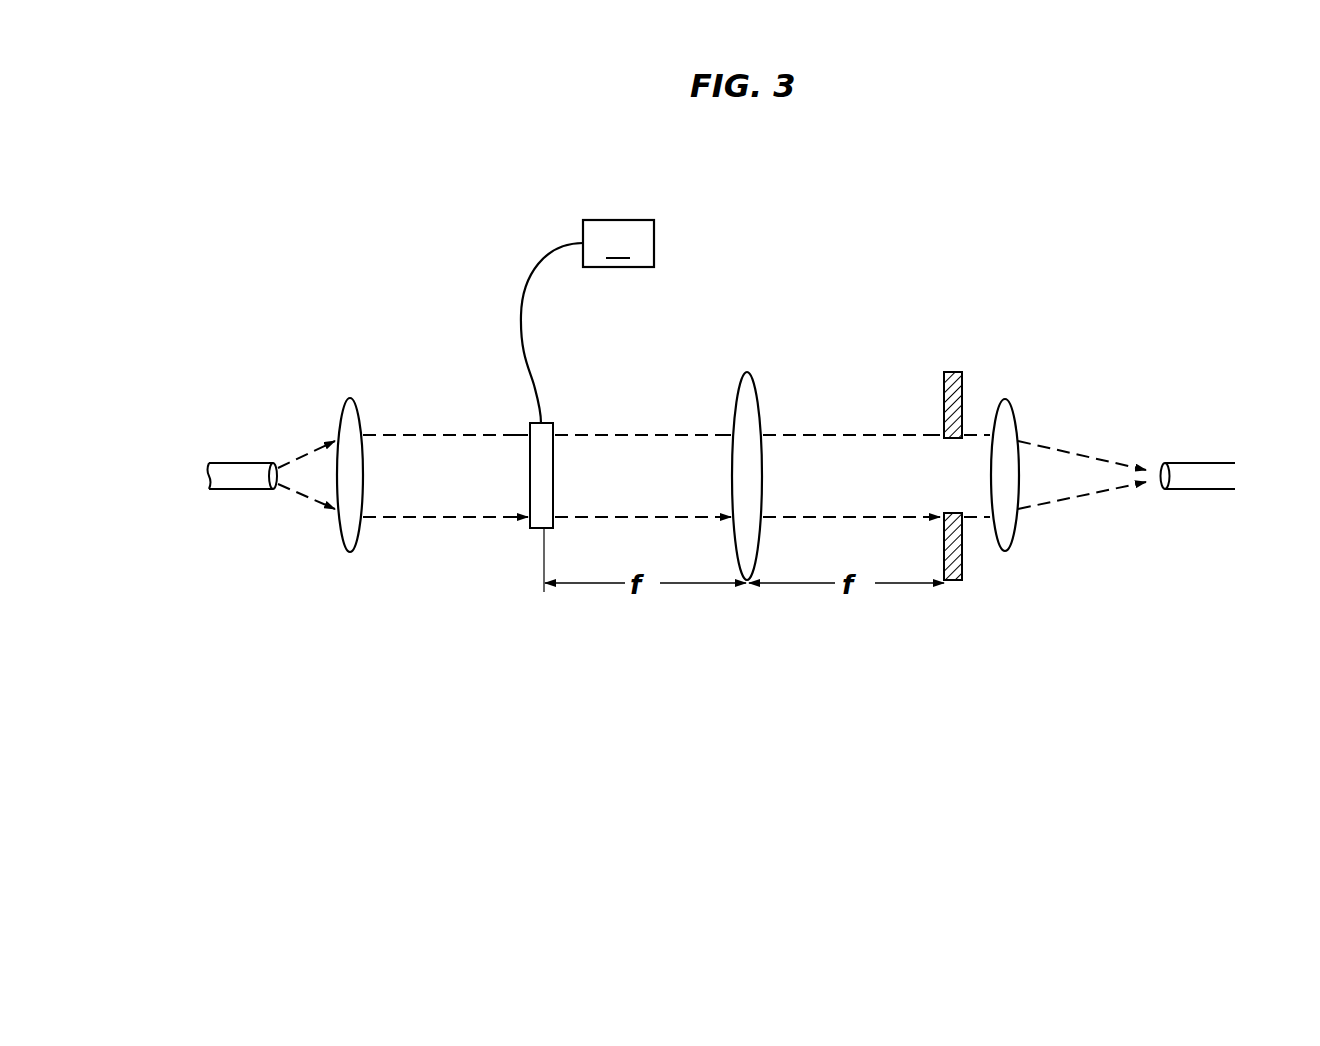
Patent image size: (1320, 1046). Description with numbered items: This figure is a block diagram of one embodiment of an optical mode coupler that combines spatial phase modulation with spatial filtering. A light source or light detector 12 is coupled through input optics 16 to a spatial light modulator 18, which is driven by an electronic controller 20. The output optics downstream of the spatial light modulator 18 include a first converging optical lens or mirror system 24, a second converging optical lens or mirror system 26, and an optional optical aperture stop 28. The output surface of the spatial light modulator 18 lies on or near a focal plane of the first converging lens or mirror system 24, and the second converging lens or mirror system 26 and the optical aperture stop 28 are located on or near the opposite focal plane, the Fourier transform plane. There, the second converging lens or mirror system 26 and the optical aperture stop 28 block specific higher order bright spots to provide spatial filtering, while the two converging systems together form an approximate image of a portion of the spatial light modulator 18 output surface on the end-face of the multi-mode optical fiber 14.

The light source or light detector 12 is at (240, 460).
The multi-mode optical fiber 14 is at (1195, 462).
The input optics 16 is at (357, 400).
The spatial light modulator 18 is at (526, 530).
The electronic controller 20 is at (587, 321).
The first converging optical lens or mirror system 24 is at (756, 382).
The second converging optical lens or mirror system 26 is at (1013, 410).
The optical aperture stop 28 is at (963, 385).